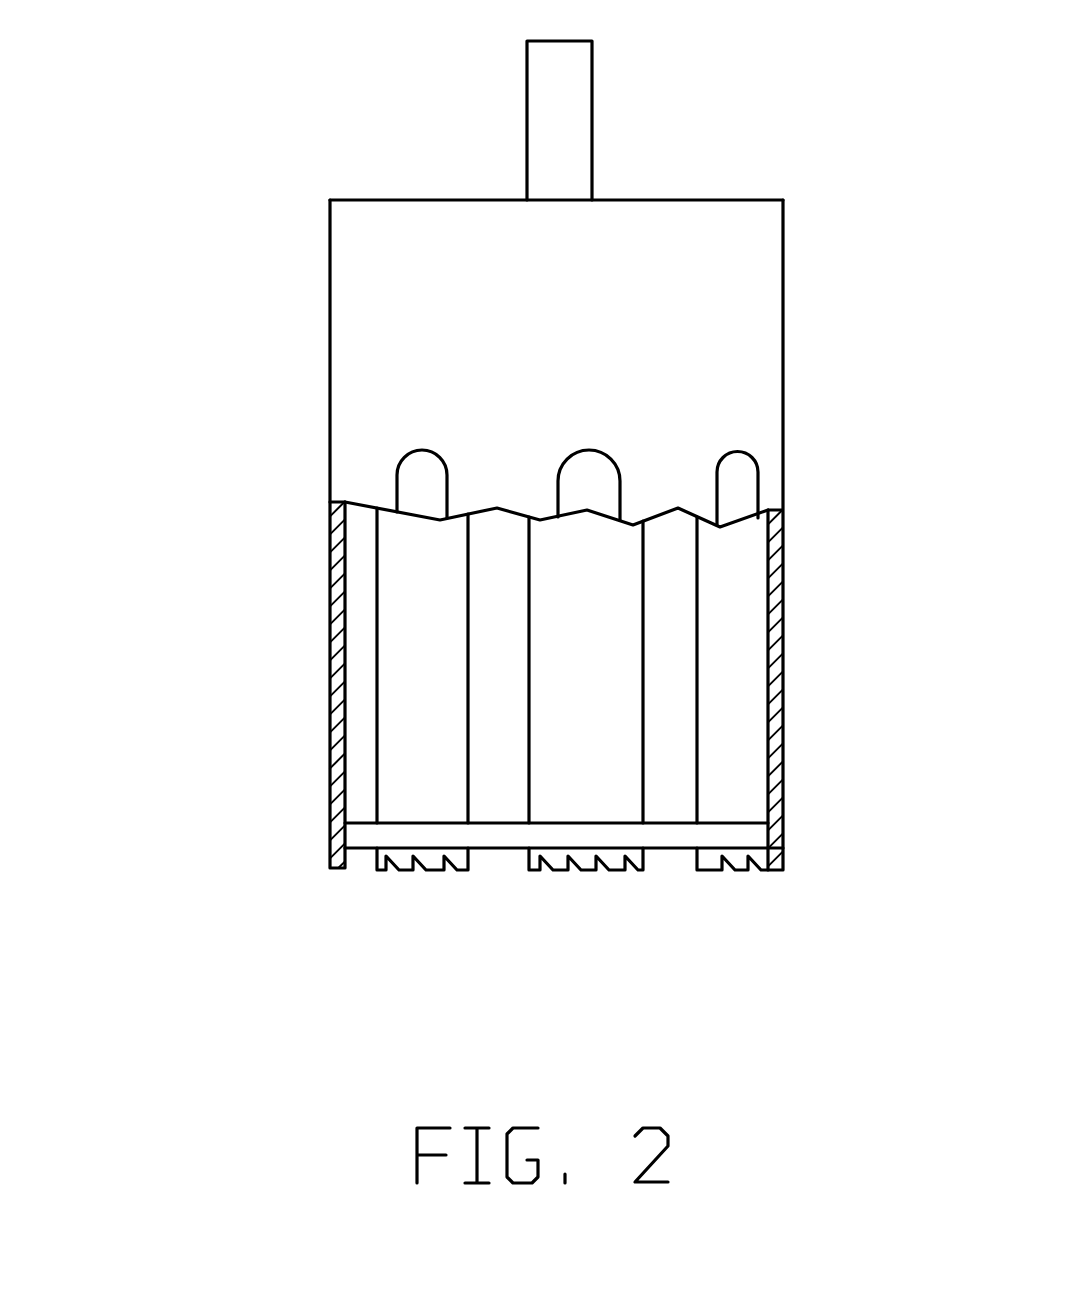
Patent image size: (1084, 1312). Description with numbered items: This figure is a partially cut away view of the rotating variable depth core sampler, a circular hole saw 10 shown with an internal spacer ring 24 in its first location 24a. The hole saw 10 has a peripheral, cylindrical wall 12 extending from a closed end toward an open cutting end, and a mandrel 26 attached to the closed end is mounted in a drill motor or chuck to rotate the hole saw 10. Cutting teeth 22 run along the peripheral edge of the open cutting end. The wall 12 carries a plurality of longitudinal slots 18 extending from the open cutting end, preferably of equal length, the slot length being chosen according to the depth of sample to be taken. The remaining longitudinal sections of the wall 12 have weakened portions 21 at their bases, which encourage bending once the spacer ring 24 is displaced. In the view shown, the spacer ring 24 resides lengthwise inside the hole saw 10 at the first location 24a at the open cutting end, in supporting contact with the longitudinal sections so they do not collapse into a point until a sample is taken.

The hole saw 10 is at (248, 294).
The peripheral cylindrical wall 12 is at (700, 307).
The longitudinal slots 18 is at (667, 588).
The weakened portions 21 is at (508, 462).
The cutting teeth 22 is at (720, 870).
The spacer ring 24 is at (503, 852).
The first location 24a is at (783, 853).
The mandrel 26 is at (592, 103).